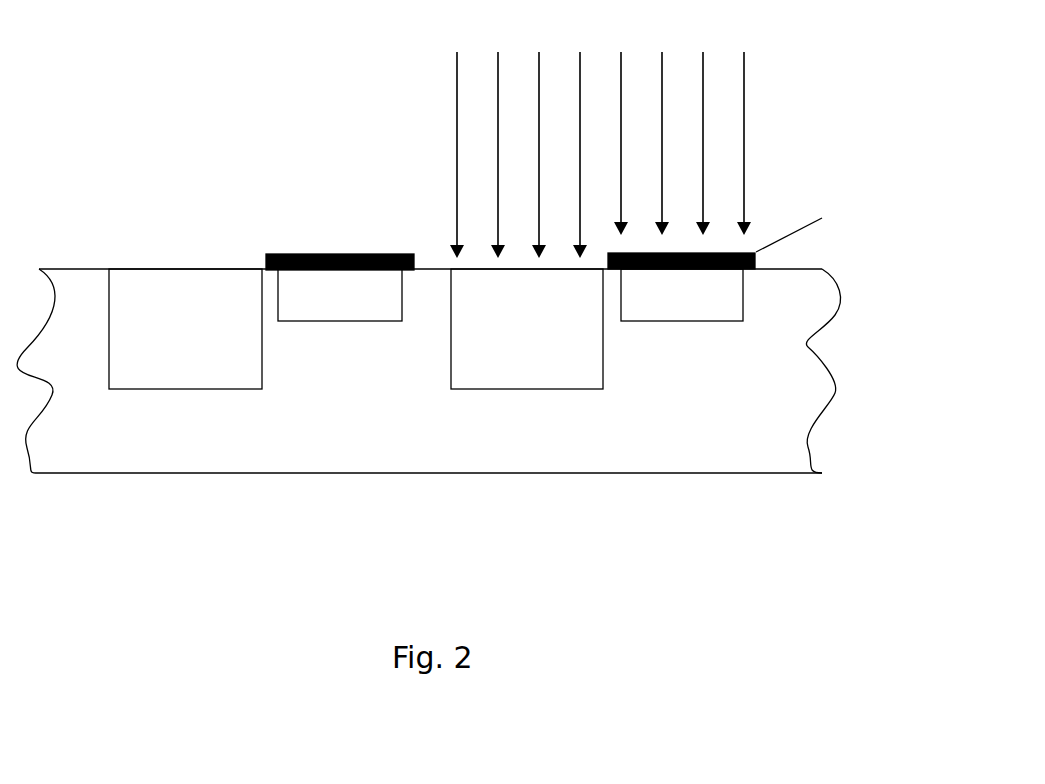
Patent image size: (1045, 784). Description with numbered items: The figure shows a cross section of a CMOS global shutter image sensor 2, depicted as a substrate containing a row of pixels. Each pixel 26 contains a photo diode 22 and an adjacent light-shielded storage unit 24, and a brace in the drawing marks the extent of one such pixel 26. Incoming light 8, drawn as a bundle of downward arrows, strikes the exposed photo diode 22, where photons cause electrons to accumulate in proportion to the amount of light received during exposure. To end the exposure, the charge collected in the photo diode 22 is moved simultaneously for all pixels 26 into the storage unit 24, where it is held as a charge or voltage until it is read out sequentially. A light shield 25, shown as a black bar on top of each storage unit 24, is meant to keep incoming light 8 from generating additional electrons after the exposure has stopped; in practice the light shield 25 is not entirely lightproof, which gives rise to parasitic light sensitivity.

The global shutter image sensor 2 is at (298, 426).
The incoming light 8 is at (447, 130).
The photo diode 22 is at (480, 365).
The storage unit 24 is at (688, 325).
The light shield 25 is at (756, 261).
The pixel 26 is at (414, 252).